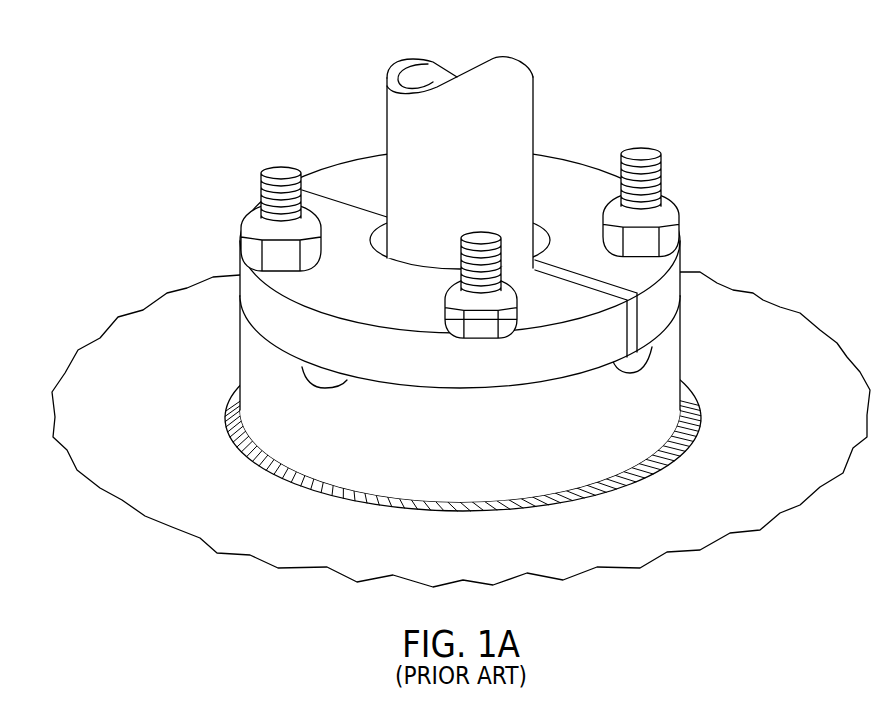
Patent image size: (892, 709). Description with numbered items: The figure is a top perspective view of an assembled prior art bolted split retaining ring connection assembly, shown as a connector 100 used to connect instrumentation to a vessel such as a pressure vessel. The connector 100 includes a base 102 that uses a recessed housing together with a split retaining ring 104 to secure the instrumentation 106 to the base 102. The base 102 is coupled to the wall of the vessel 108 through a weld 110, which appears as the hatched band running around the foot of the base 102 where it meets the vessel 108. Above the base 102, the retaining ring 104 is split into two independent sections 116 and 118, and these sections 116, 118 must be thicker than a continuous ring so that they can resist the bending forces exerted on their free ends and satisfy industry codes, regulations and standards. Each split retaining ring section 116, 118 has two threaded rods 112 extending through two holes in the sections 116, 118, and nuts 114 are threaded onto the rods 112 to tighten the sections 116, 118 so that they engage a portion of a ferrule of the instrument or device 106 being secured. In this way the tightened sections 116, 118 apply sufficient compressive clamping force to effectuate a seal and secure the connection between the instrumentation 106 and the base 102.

The connector 100 is at (461, 322).
The base 102 is at (312, 453).
The split retaining ring 104 is at (460, 255).
The instrumentation 106 is at (387, 112).
The vessel 108 is at (787, 432).
The weld 110 is at (413, 503).
The threaded rods 112 is at (662, 172).
The nuts 114 is at (679, 220).
The split retaining ring section 116 is at (592, 153).
The split retaining ring section 118 is at (408, 378).